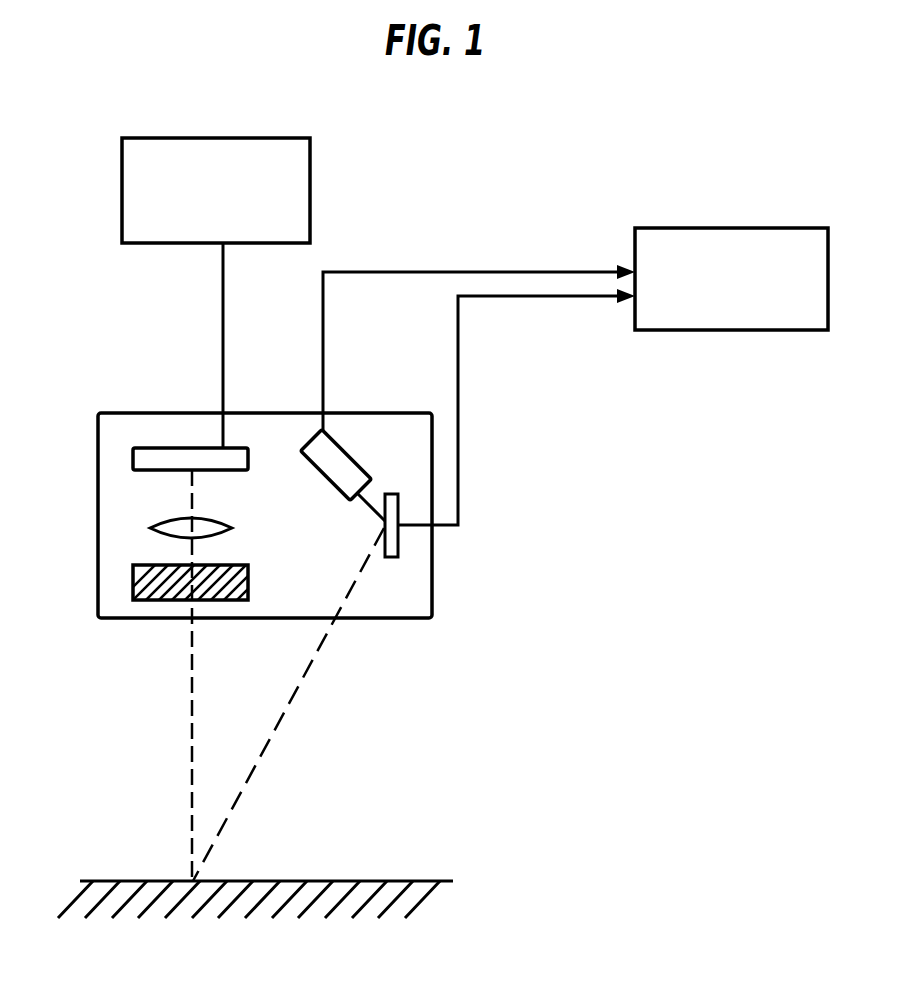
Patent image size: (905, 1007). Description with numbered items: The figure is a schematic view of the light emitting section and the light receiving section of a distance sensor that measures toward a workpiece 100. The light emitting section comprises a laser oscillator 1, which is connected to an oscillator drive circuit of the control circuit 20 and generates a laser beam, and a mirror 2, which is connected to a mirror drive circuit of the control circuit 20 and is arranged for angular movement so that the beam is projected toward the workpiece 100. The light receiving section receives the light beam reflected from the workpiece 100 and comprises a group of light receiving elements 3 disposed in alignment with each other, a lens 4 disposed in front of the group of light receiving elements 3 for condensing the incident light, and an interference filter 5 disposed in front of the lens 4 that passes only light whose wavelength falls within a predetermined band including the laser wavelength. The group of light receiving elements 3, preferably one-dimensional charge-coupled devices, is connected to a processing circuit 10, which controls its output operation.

The laser oscillator 1 is at (350, 458).
The mirror 2 is at (390, 558).
The group of light receiving elements 3 is at (232, 472).
The lens 4 is at (213, 518).
The interference filter 5 is at (223, 565).
The processing circuit 10 is at (215, 138).
The control circuit 20 is at (735, 228).
The workpiece 100 is at (317, 881).